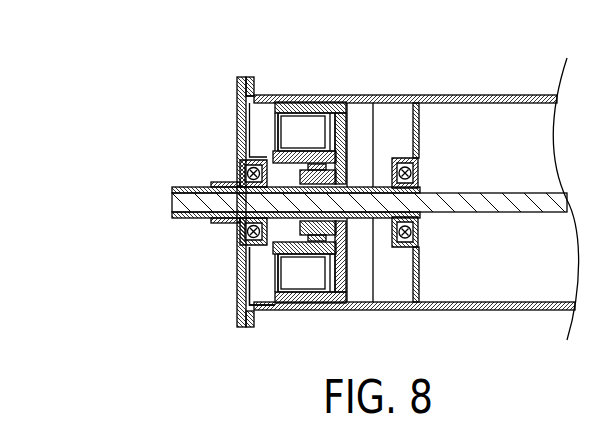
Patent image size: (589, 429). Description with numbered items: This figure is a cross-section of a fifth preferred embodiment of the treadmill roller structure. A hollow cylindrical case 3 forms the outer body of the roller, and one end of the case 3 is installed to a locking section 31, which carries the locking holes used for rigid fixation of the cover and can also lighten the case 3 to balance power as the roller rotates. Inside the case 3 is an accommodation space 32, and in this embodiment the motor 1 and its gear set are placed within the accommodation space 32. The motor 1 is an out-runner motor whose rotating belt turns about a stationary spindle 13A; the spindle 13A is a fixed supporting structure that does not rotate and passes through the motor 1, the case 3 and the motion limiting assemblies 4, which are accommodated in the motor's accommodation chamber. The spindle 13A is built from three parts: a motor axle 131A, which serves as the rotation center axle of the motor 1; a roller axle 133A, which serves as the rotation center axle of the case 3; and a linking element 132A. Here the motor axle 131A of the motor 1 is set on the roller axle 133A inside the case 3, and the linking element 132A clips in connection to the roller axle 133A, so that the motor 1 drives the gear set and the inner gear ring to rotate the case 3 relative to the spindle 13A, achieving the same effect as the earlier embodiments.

The motor 1 is at (311, 102).
The case 3 is at (397, 100).
The motion limiting assemblies 4 is at (240, 175).
The locking section 31 is at (252, 77).
The accommodation space 32 is at (265, 277).
The spindle 13A is at (299, 199).
The motor axle 131A is at (186, 188).
The linking element 132A is at (178, 201).
The roller axle 133A is at (178, 213).